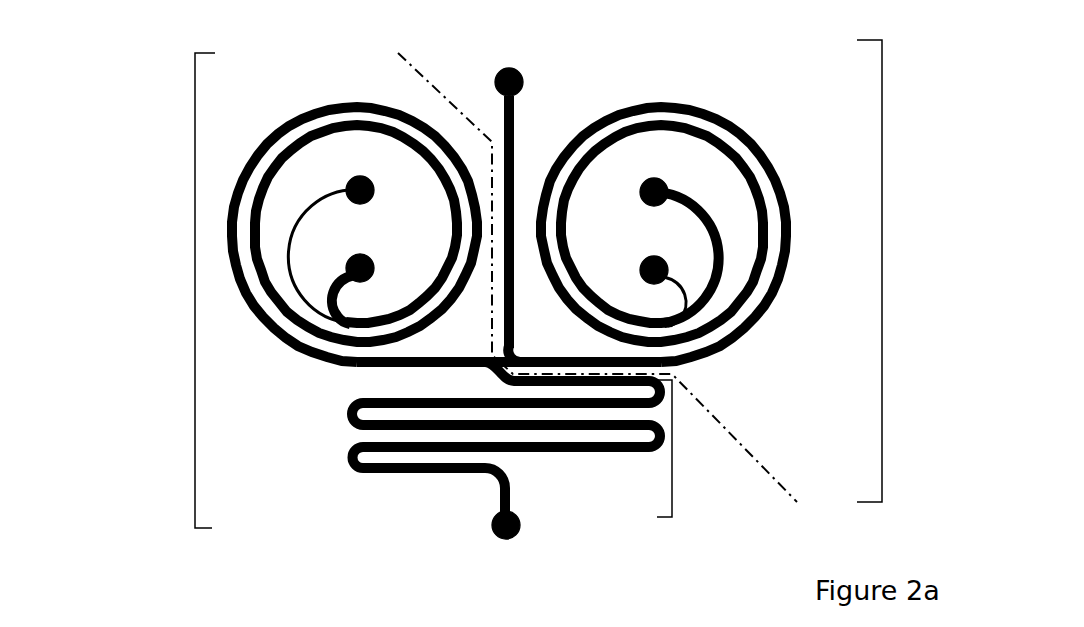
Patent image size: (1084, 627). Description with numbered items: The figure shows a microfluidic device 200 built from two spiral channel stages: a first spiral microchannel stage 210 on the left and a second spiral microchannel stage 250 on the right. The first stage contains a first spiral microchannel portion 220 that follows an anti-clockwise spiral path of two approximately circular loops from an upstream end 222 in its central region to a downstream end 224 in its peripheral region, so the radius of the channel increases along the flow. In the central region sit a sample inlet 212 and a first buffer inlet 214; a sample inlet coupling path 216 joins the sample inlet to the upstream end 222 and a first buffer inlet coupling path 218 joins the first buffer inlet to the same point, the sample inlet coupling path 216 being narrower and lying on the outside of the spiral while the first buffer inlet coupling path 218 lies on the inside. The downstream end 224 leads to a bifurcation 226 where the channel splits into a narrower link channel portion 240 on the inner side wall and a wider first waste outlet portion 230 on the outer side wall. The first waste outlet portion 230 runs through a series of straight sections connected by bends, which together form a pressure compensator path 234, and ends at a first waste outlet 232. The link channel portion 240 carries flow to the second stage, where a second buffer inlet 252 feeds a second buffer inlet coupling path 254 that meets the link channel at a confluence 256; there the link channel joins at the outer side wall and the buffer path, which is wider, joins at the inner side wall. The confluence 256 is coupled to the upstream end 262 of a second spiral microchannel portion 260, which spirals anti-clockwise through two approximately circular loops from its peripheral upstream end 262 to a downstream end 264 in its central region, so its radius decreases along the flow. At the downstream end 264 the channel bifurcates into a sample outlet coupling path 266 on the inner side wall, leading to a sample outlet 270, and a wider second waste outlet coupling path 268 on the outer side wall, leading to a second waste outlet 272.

The microfluidic device 200 is at (166, 75).
The first spiral microchannel stage 210 is at (195, 290).
The sample inlet 212 is at (348, 182).
The first buffer inlet 214 is at (370, 260).
The sample inlet coupling path 216 is at (308, 213).
The first buffer inlet coupling path 218 is at (337, 297).
The first spiral microchannel portion 220 is at (227, 210).
The upstream end 222 is at (350, 328).
The downstream end 224 is at (375, 368).
The bifurcation 226 is at (485, 368).
The first waste outlet portion 230 is at (672, 452).
The first waste outlet 232 is at (497, 532).
The pressure compensator path 234 is at (512, 381).
The link channel portion 240 is at (492, 368).
The second spiral microchannel stage 250 is at (882, 270).
The second buffer inlet 252 is at (500, 76).
The second buffer inlet coupling path 254 is at (512, 185).
The confluence 256 is at (528, 362).
The second spiral microchannel portion 260 is at (762, 313).
The upstream end 262 is at (700, 365).
The downstream end 264 is at (667, 328).
The sample outlet coupling path 266 is at (680, 290).
The second waste outlet coupling path 268 is at (722, 243).
The sample outlet 270 is at (645, 265).
The second waste outlet 272 is at (668, 187).